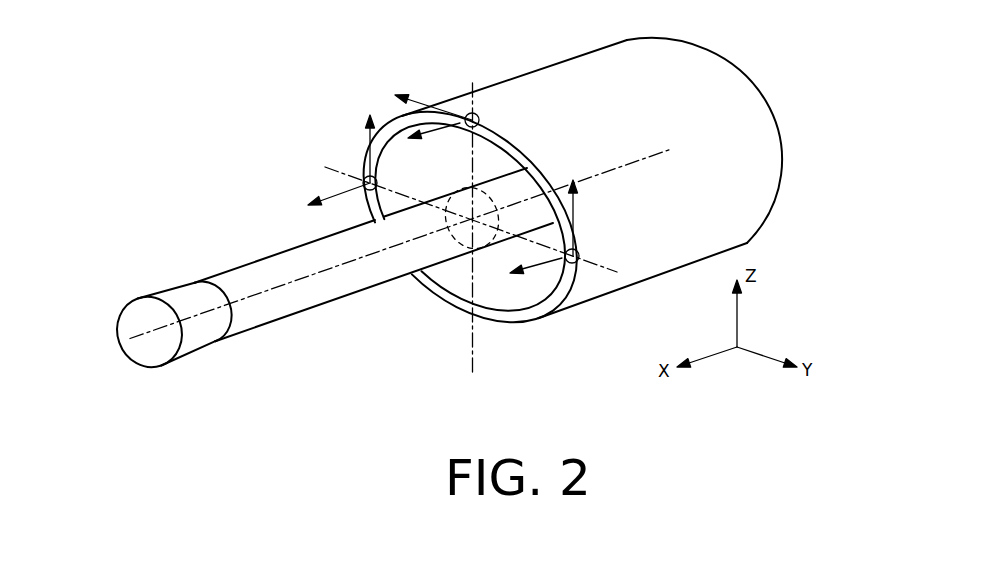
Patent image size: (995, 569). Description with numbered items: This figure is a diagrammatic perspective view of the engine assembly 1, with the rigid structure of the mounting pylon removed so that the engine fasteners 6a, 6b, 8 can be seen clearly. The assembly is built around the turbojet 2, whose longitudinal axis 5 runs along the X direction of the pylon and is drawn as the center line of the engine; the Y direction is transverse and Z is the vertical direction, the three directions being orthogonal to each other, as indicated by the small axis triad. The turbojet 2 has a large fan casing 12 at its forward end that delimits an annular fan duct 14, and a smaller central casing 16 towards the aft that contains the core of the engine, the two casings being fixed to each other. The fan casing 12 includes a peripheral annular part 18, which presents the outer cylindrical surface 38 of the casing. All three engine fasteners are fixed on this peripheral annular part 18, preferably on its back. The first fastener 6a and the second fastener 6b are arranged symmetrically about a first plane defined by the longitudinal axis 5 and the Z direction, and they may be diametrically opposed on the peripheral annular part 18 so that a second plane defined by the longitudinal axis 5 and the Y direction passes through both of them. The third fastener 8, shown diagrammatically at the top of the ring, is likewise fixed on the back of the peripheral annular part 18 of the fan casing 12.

The engine assembly 1 is at (239, 130).
The turbojet 2 is at (315, 326).
The longitudinal axis 5 is at (132, 332).
The first engine fastener 6a is at (363, 177).
The second engine fastener 6b is at (580, 263).
The third engine fastener 8 is at (480, 120).
The fan casing 12 is at (762, 189).
The annular fan duct 14 is at (453, 282).
The central casing 16 is at (277, 268).
The peripheral annular part 18 is at (503, 318).
The outer cylindrical surface 38 is at (727, 97).